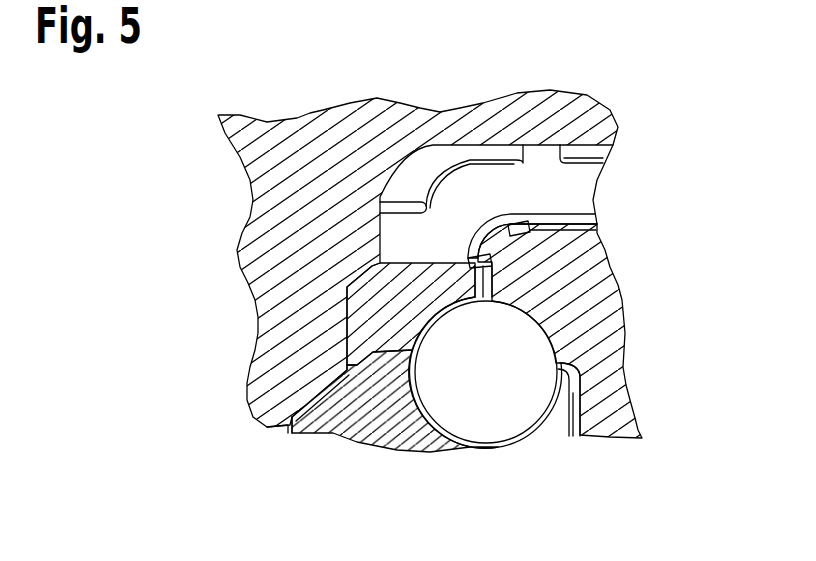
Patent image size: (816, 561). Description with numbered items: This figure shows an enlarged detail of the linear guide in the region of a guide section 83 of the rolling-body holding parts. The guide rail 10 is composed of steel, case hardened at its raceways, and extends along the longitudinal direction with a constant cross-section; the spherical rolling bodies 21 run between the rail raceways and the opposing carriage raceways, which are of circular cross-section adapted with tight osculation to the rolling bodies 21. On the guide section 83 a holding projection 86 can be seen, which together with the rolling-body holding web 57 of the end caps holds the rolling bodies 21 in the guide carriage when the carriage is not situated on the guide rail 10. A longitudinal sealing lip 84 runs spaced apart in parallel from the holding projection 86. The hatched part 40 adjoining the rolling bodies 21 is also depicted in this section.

The guide rail 10 is at (610, 413).
The rolling bodies 21 is at (477, 387).
The inner ring 40 is at (375, 407).
The rolling-body holding web 57 is at (548, 430).
The guide section 83 is at (378, 293).
The longitudinal sealing lip 84 is at (515, 262).
The holding projection 86 is at (490, 297).